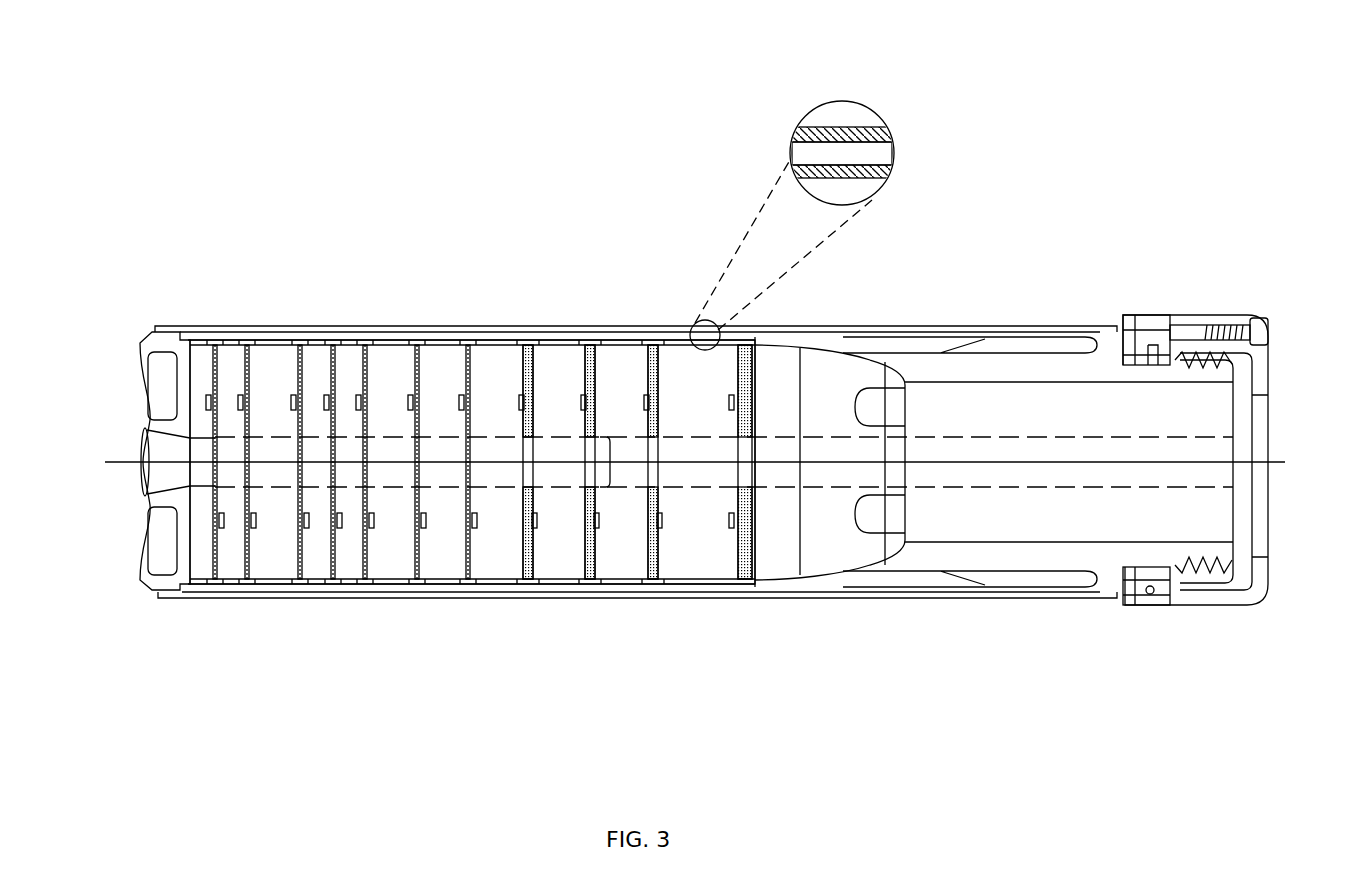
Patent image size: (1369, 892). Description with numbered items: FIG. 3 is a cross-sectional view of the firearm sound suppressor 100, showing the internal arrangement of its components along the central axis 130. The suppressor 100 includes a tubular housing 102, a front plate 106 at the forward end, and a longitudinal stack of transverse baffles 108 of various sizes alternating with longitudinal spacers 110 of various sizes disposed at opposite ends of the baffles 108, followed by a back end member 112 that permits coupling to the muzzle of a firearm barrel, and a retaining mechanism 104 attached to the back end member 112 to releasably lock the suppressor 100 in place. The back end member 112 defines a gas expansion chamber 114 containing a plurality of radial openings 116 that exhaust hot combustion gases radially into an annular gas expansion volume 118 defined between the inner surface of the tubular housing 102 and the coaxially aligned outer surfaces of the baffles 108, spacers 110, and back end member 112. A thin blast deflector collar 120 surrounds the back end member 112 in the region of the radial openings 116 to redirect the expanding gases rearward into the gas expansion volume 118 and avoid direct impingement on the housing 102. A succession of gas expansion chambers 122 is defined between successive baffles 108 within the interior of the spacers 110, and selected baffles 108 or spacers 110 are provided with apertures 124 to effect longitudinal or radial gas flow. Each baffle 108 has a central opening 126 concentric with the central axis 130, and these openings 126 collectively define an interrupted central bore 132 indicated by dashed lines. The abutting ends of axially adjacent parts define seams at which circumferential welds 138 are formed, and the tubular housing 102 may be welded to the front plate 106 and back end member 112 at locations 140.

The firearm sound suppressor 100 is at (626, 112).
The tubular housing 102 is at (376, 330).
The retaining mechanism 104 is at (1215, 320).
The front plate 106 is at (178, 345).
The transverse baffles 108 is at (417, 562).
The longitudinal spacers 110 is at (497, 365).
The back end member 112 is at (930, 365).
The gas expansion chamber 114 is at (822, 562).
The radial openings 116 is at (878, 522).
The annular gas expansion volume 118 is at (630, 324).
The blast deflector collar 120 is at (972, 577).
The gas expansion chambers 122 is at (560, 562).
The apertures 124 is at (335, 345).
The central opening 126 is at (610, 455).
The central axis 130 is at (118, 460).
The interrupted central bore 132 is at (400, 482).
The welds 138 is at (590, 345).
The locations 140 is at (155, 597).